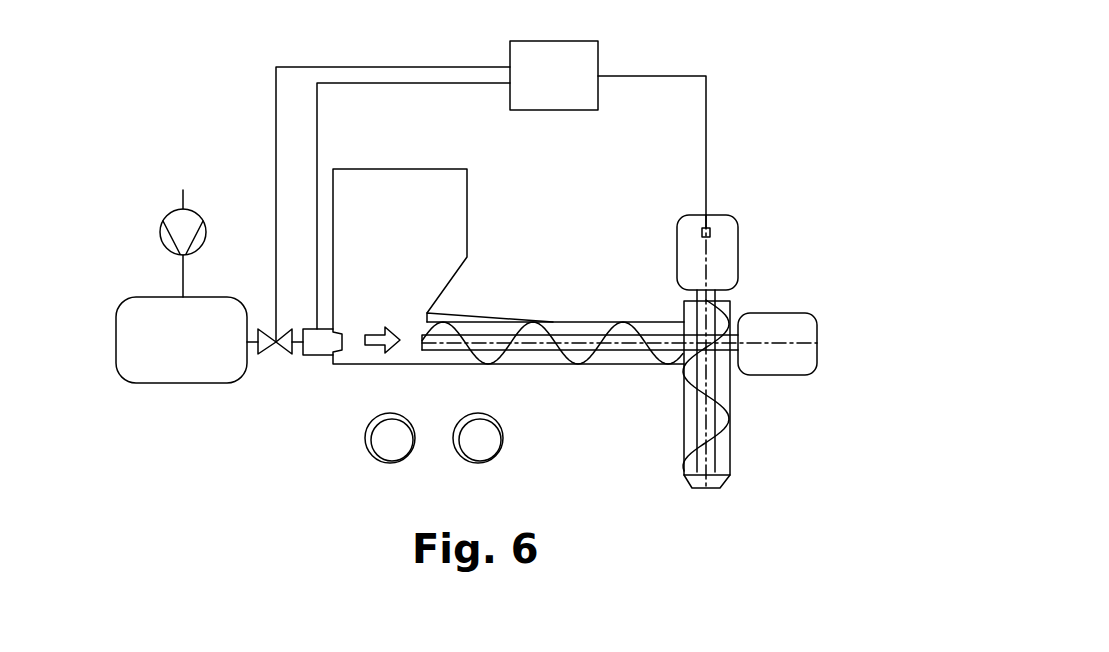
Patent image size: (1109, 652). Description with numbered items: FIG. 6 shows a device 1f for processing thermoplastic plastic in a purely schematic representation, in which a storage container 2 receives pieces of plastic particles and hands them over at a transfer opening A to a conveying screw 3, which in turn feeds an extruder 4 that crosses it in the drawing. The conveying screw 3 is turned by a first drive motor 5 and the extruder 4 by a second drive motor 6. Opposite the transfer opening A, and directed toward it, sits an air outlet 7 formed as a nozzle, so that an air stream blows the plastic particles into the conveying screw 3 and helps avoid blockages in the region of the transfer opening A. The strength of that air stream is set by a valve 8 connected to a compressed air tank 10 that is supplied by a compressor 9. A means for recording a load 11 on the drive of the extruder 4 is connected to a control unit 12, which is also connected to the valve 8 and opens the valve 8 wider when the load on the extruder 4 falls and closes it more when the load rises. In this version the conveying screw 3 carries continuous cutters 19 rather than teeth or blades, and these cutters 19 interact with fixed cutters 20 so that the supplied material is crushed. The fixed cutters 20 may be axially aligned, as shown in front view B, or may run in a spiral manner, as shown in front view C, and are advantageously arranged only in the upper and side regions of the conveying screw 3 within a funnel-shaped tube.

The device 1f is at (814, 43).
The storage container 2 is at (457, 222).
The conveying screw 3 is at (577, 355).
The extruder 4 is at (717, 438).
The first drive motor 5 is at (782, 362).
The second drive motor 6 is at (725, 257).
The air outlet 7 is at (318, 360).
The valve 8 is at (285, 347).
The compressor 9 is at (172, 235).
The compressed air tank 10 is at (177, 373).
The means for recording a load 11 is at (709, 228).
The control unit 12 is at (588, 65).
The continuous cutters 19 is at (543, 330).
The fixed cutters 20 is at (443, 315).
The transfer opening A is at (409, 320).
The front view B is at (390, 458).
The front view C is at (478, 458).